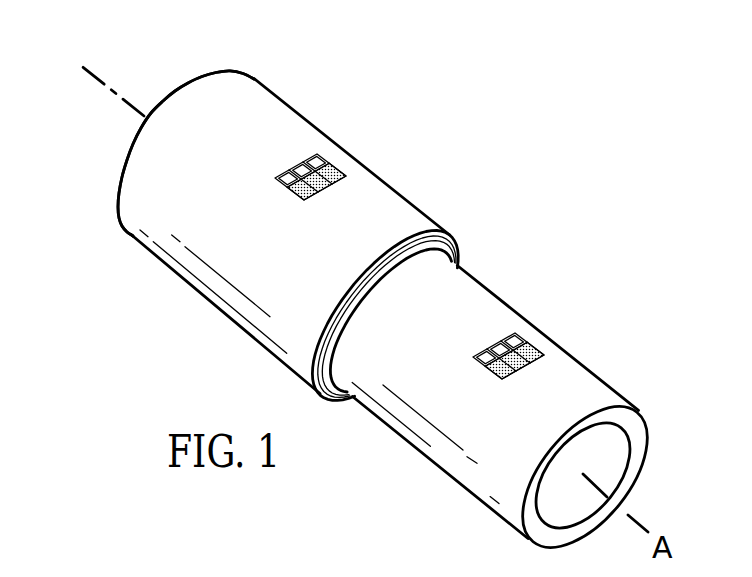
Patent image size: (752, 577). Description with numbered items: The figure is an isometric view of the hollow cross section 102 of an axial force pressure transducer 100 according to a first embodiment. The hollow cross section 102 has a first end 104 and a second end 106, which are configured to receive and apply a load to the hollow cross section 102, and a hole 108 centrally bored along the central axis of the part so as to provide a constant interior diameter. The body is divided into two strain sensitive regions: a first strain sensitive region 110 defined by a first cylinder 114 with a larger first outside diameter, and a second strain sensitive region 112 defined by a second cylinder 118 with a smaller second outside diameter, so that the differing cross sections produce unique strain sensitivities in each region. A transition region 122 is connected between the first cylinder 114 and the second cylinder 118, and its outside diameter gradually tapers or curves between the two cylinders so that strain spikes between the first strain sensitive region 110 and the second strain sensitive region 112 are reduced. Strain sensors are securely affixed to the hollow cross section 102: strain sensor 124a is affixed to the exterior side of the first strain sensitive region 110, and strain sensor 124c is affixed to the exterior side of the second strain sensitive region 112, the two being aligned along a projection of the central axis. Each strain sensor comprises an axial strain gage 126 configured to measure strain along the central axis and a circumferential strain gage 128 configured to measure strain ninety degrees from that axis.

The axial force pressure transducer 100 is at (103, 151).
The hollow cross section 102 is at (97, 75).
The first end 104 is at (201, 79).
The second end 106 is at (645, 460).
The hole 108 is at (614, 443).
The first strain sensitive region 110 is at (293, 109).
The second strain sensitive region 112 is at (504, 297).
The first cylinder 114 is at (180, 279).
The second cylinder 118 is at (434, 461).
The transition region 122 is at (455, 244).
The strain sensor 124a is at (270, 165).
The strain sensor 124c is at (461, 338).
The axial strain gage 126 is at (292, 194).
The circumferential strain gage 128 is at (330, 158).